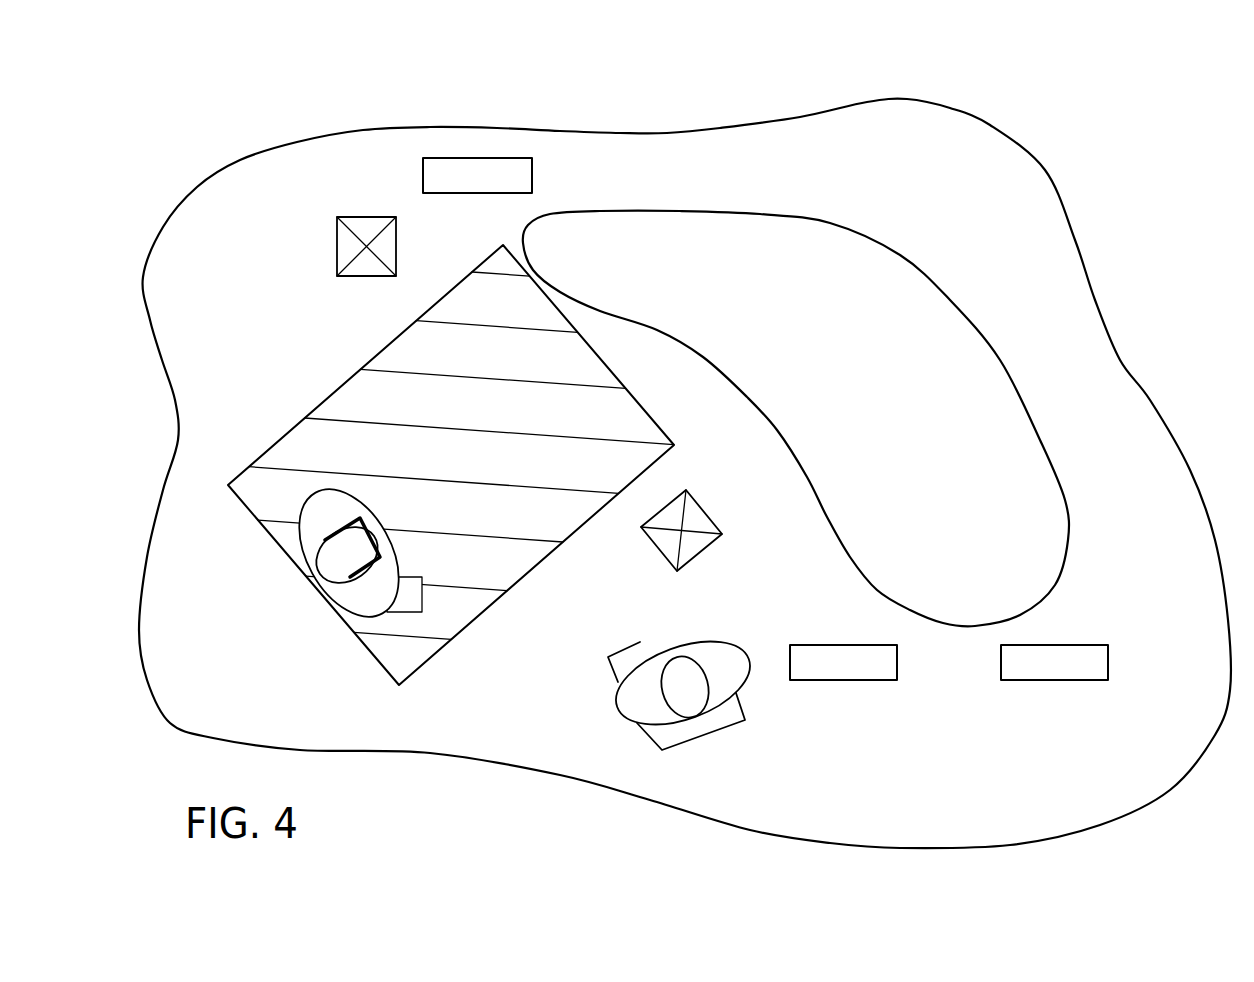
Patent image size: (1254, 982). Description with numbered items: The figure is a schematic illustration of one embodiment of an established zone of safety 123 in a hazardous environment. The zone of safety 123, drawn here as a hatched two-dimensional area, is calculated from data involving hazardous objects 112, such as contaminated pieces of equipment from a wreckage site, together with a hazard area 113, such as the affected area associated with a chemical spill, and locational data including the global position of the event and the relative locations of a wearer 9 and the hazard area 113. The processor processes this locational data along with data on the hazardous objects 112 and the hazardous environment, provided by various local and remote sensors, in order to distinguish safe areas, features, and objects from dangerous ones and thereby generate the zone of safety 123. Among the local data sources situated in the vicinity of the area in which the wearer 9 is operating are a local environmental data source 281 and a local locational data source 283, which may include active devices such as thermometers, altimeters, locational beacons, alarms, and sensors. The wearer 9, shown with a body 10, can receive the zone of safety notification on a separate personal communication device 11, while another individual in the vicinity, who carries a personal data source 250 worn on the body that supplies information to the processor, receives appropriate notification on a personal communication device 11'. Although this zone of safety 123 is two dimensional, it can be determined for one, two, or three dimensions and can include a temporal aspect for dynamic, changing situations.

The wearer 9 is at (333, 567).
The user body 10 is at (300, 528).
The personal communication device 11 is at (445, 627).
The personal communication device 11' is at (652, 665).
The hazardous objects 112 is at (343, 251).
The hazard area 113 is at (883, 393).
The zone of safety 123 is at (340, 385).
The personal data source 250 is at (733, 713).
The local environmental data source 281 is at (517, 165).
The local locational data source 283 is at (880, 679).